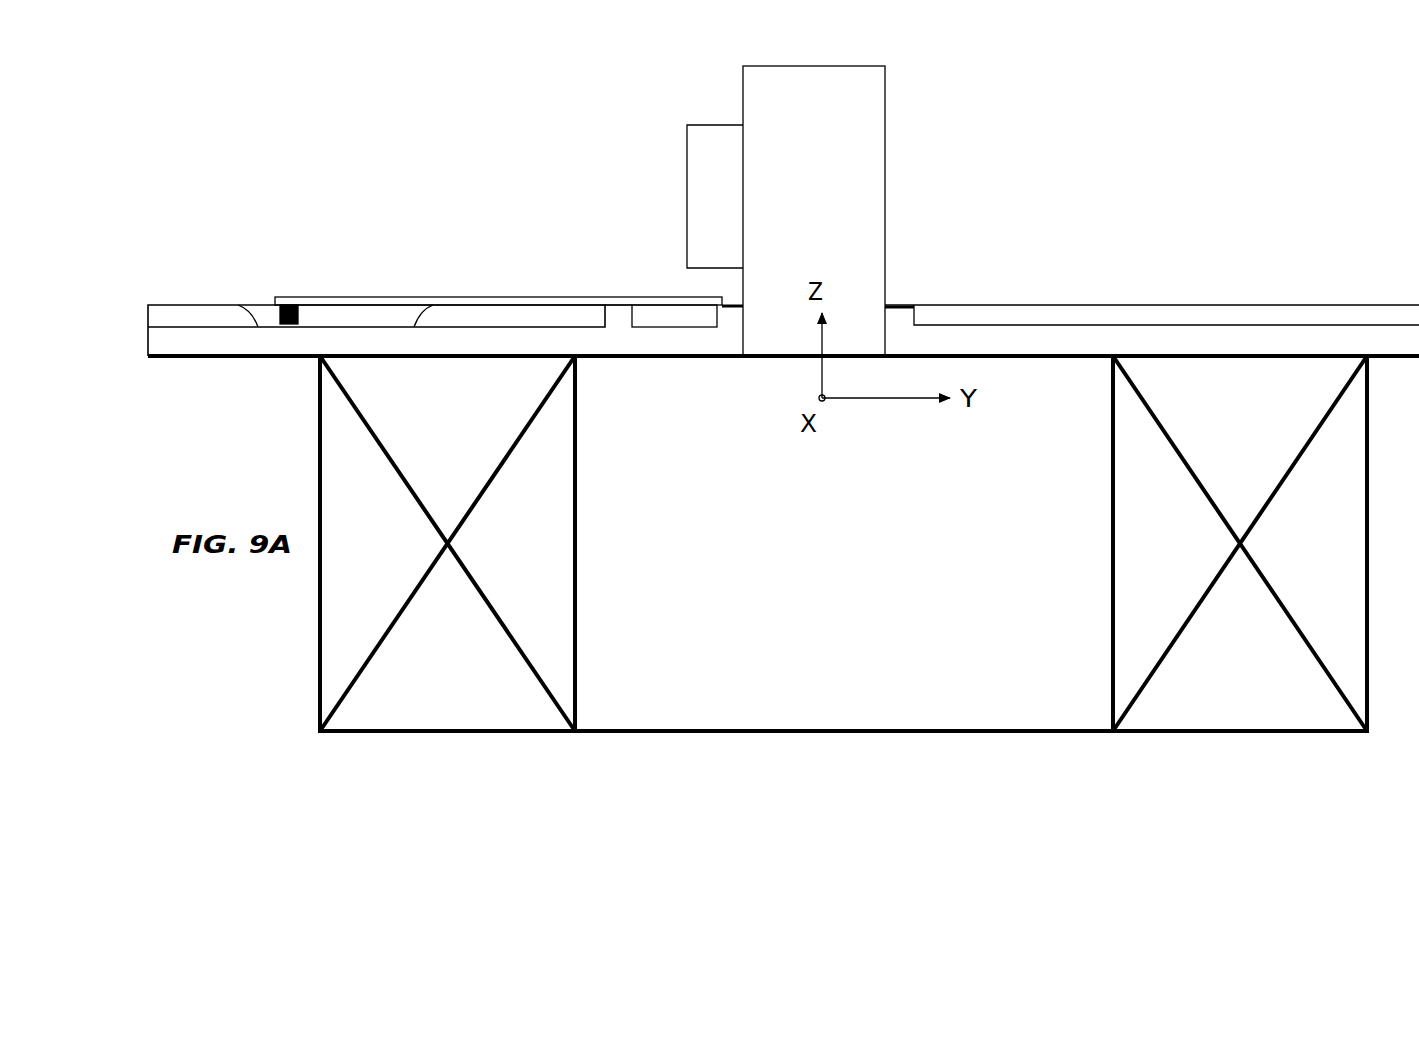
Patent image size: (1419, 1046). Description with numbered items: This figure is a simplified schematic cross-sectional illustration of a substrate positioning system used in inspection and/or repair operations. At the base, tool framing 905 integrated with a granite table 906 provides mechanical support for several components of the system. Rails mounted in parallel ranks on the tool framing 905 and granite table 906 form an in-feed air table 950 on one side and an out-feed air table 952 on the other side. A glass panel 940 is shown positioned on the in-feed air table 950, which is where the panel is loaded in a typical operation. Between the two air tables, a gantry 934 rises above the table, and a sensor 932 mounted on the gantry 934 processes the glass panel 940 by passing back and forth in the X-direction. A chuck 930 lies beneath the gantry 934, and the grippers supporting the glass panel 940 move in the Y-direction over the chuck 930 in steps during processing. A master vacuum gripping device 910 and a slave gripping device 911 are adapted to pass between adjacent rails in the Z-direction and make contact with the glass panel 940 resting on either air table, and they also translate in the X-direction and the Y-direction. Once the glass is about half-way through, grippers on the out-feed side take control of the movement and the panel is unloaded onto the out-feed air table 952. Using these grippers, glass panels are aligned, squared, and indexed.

The tool framing 905 is at (455, 733).
The granite table 906 is at (843, 733).
The master vacuum gripping device 910 is at (340, 205).
The slave gripping device 911 is at (290, 302).
The chuck 930 is at (666, 308).
The sensor 932 is at (715, 147).
The gantry 934 is at (814, 211).
The glass panel 940 is at (419, 298).
The in-feed air table 950 is at (228, 308).
The out-feed air table 952 is at (1227, 307).